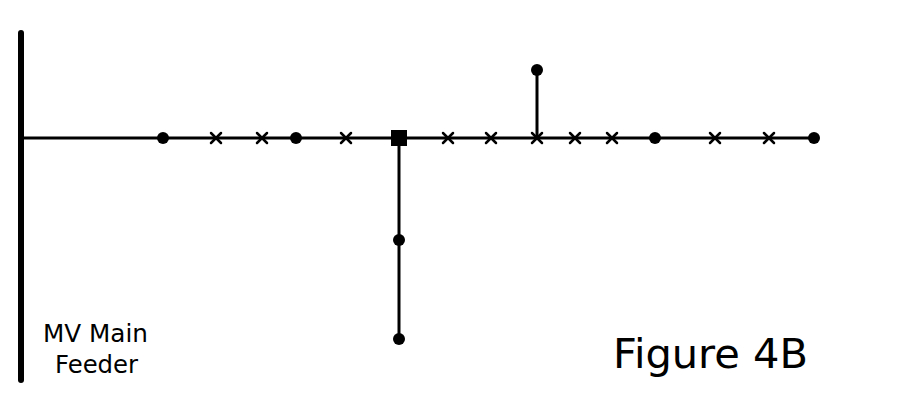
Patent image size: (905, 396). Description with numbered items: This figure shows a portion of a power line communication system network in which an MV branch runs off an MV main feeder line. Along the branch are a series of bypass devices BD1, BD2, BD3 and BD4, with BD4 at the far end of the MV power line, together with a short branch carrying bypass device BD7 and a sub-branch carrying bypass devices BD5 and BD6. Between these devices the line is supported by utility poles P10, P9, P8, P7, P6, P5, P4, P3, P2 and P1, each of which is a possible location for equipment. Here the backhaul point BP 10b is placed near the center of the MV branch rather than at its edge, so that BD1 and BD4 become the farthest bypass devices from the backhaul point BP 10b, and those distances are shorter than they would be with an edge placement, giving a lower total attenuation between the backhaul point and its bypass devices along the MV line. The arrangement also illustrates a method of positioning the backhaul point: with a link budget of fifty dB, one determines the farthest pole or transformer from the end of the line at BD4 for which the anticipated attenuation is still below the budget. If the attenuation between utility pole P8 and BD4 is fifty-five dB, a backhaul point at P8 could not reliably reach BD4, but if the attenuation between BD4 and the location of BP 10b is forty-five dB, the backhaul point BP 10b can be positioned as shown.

The backhaul point BP 10b is at (409, 124).
The bypass device BD1 is at (171, 125).
The bypass device BD2 is at (297, 125).
The bypass device BD3 is at (675, 124).
The bypass device BD4 is at (835, 124).
The bypass device BD5 is at (429, 242).
The bypass device BD6 is at (429, 340).
The bypass device BD7 is at (566, 69).
The utility pole P1 is at (770, 150).
The utility pole P2 is at (716, 150).
The utility pole P3 is at (613, 150).
The utility pole P4 is at (576, 150).
The utility pole P5 is at (538, 150).
The utility pole P6 is at (492, 150).
The utility pole P7 is at (449, 150).
The utility pole P8 is at (347, 150).
The utility pole P9 is at (263, 150).
The utility pole P10 is at (217, 150).